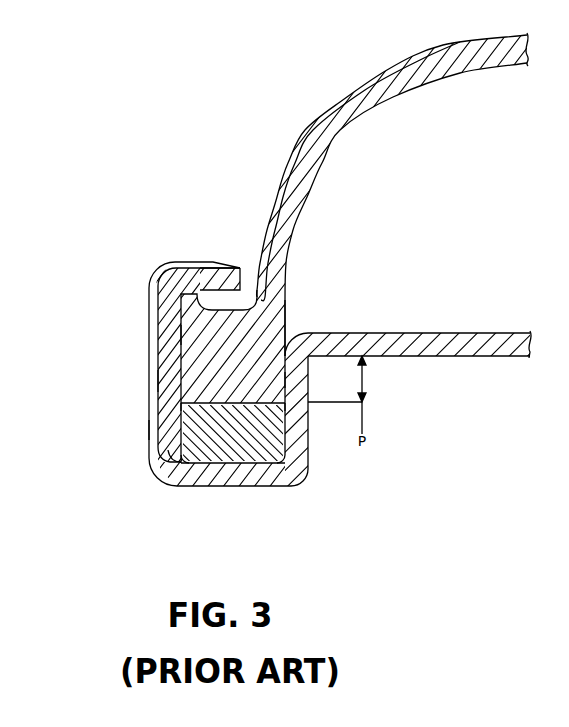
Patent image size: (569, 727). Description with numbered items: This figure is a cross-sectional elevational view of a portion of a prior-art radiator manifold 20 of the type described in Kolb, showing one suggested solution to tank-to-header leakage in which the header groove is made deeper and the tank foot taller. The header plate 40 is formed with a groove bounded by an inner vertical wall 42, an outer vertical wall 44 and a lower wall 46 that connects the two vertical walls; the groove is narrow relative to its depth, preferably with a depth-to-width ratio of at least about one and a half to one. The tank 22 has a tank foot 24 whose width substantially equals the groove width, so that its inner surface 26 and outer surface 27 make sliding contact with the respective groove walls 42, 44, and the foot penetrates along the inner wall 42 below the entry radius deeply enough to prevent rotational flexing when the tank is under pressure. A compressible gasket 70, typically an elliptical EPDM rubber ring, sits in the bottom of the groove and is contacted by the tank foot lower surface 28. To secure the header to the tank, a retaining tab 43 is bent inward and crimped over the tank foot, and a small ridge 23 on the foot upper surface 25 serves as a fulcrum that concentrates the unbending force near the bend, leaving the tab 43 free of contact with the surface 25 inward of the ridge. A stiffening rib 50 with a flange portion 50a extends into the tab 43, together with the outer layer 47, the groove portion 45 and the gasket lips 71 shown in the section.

The manifold 20 is at (170, 145).
The tank 22 is at (327, 130).
The ridge 23 is at (183, 318).
The tank foot 24 is at (280, 310).
The foot upper surface 25 is at (220, 305).
The inner surface of tank foot 26 is at (290, 337).
The outer surface of tank foot 27 is at (180, 382).
The tank foot lower surface 28 is at (180, 432).
The header plate 40 is at (442, 358).
The inner vertical wall 42 is at (287, 380).
The tab 43 is at (206, 280).
The outer vertical wall 44 is at (190, 334).
The groove portion 45 is at (257, 298).
The lower wall 46 is at (168, 451).
The outer cover layer 47 is at (158, 279).
The stiffening rib 50 is at (170, 353).
The insert sheet flange 50a is at (170, 282).
The gasket 70 is at (250, 453).
The sealing lip 71 is at (182, 407).